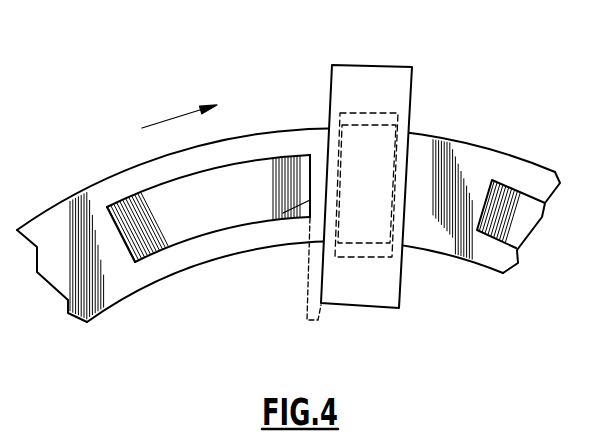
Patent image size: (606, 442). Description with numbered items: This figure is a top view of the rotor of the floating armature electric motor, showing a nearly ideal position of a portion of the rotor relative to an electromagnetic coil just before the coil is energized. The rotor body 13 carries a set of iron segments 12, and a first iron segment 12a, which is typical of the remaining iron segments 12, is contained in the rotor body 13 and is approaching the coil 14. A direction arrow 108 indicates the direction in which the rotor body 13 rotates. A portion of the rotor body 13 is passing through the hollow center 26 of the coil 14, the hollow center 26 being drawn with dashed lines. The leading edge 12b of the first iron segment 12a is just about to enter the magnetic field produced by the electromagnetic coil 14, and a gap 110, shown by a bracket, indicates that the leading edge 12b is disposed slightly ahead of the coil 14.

The iron segments 12 is at (523, 220).
The first iron segment 12a is at (150, 253).
The leading edge 12b is at (286, 218).
The rotor body 13 is at (106, 179).
The coil 14 is at (373, 65).
The hollow center 26 is at (383, 113).
The direction arrow 108 is at (172, 113).
The gap 110 is at (310, 320).